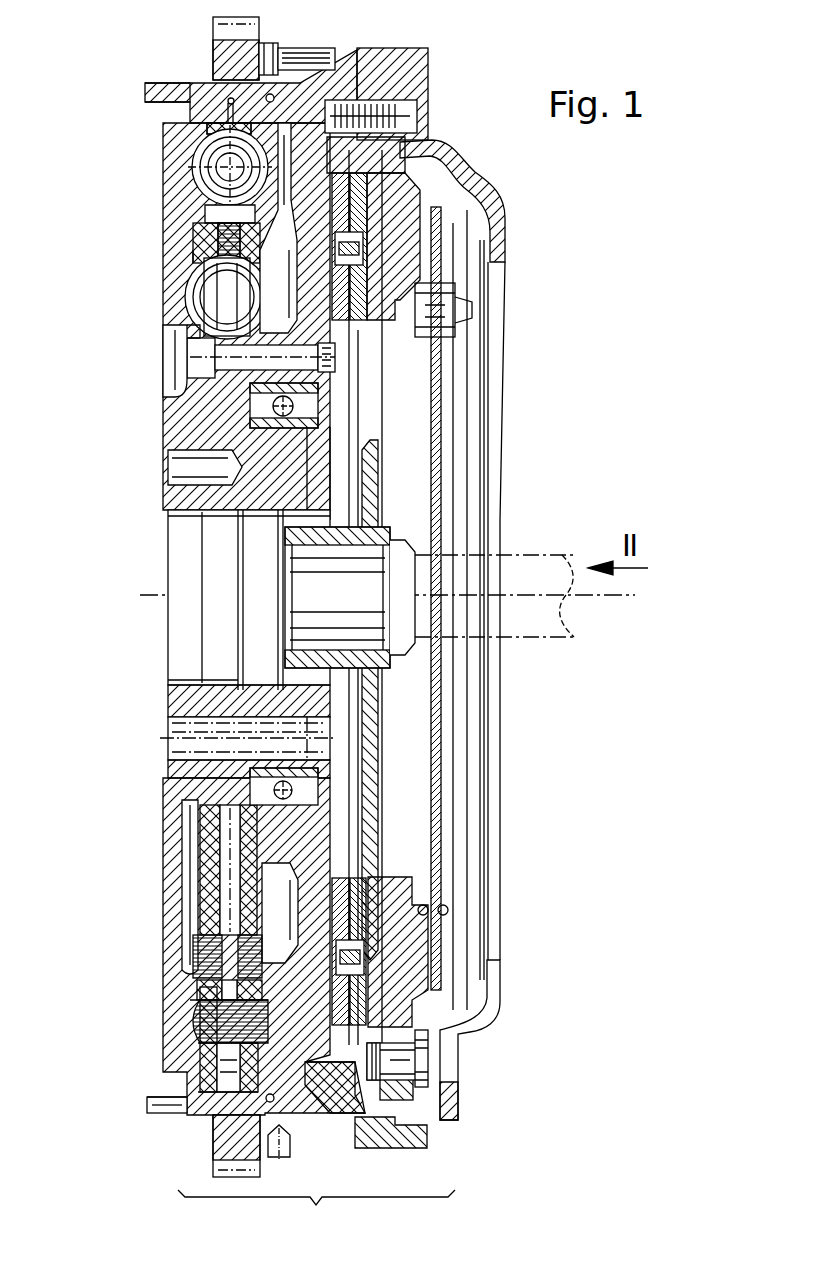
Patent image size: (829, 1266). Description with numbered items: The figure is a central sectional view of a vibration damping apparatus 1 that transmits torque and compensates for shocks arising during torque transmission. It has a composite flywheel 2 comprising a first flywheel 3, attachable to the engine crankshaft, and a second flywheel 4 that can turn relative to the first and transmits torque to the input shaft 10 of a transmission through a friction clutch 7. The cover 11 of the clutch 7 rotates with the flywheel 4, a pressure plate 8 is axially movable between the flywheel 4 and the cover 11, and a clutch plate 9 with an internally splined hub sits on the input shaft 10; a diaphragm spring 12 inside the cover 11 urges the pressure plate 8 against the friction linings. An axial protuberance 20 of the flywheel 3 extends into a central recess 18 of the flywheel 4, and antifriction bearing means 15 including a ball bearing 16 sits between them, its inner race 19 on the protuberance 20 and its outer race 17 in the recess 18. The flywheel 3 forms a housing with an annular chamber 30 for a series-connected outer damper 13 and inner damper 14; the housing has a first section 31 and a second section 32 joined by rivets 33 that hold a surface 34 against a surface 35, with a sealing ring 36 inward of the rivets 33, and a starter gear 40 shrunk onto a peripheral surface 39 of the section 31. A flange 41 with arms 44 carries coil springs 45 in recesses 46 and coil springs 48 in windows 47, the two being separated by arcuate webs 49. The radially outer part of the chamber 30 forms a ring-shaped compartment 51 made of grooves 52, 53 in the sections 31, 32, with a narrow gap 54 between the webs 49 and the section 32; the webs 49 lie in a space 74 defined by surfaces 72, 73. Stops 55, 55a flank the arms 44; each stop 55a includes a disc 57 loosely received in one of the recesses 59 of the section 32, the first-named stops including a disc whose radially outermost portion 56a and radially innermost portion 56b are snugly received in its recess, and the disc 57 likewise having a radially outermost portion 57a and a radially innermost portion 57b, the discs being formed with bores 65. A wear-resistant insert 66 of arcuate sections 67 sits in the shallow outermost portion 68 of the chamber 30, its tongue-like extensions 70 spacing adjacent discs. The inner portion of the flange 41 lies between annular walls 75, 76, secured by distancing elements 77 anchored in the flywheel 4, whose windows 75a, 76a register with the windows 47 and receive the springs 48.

The damping apparatus 1 is at (492, 61).
The composite flywheel 2 is at (316, 1218).
The first flywheel 3 is at (190, 871).
The second flywheel 4 is at (355, 1148).
The friction clutch 7 is at (503, 192).
The pressure plate 8 is at (400, 190).
The clutch plate 9 is at (370, 462).
The input shaft 10 is at (548, 612).
The cover 11 is at (490, 212).
The diaphragm spring 12 is at (442, 417).
The outer damper 13 is at (183, 168).
The inner damper 14 is at (168, 307).
The antifriction bearing means 15 is at (180, 485).
The ball bearing 16 is at (170, 463).
The outer race 17 is at (336, 388).
The recess 18 is at (336, 358).
The inner race 19 is at (252, 430).
The axial protuberance 20 is at (185, 512).
The annular chamber 30 is at (200, 829).
The first section 31 is at (200, 820).
The second section 32 is at (305, 1092).
The rivets 33 is at (325, 55).
The radially extending surface 34 is at (292, 47).
The radially extending surface 35 is at (306, 59).
The sealing ring 36 is at (265, 96).
The peripheral surface 39 is at (228, 66).
The starter gear 40 is at (222, 30).
The flange 41 is at (215, 840).
The arms 44 is at (220, 1032).
The energy storing elements 45 is at (200, 176).
The recesses 46 is at (198, 160).
The windows 47 is at (222, 298).
The coil springs 48 is at (200, 352).
The arcuate webs 49 is at (229, 243).
The ring-shaped compartment 51 is at (385, 1070).
The ring-shaped groove 52 is at (222, 1012).
The ring-shaped groove 53 is at (380, 1050).
The gap 54 is at (196, 258).
The stops 55 is at (215, 1038).
The stops 55a is at (200, 993).
The radially outermost portion 56a is at (200, 1113).
The radially innermost portion 56b is at (200, 968).
The disc 57 is at (229, 990).
The radially outermost portion 57a is at (320, 1095).
The radially innermost portion 57b is at (336, 953).
The recesses 59 is at (385, 1137).
The bores 65 is at (215, 1008).
The insert 66 is at (229, 128).
The arcuate sections 67 is at (222, 127).
The radially outermost portion 68 is at (222, 99).
The tongue-like extensions 70 is at (215, 1100).
The surface 72 is at (206, 213).
The surface 73 is at (415, 130).
The space 74 is at (215, 228).
The annular wall 75 is at (195, 802).
The windows 75a is at (185, 348).
The annular wall 76 is at (252, 888).
The windows 76a is at (195, 320).
The distancing elements 77 is at (225, 355).